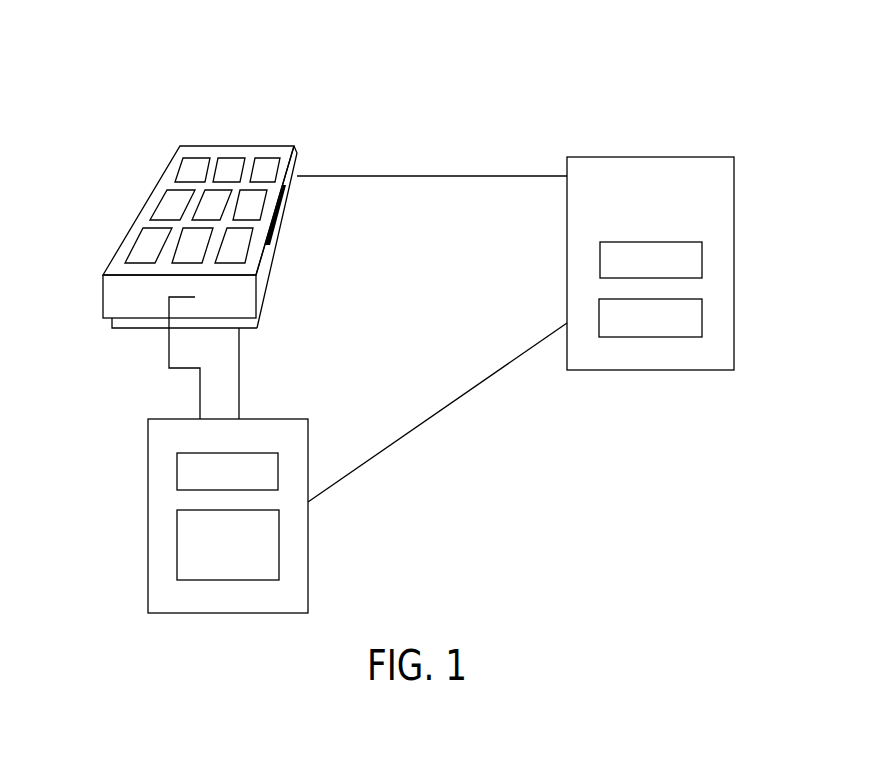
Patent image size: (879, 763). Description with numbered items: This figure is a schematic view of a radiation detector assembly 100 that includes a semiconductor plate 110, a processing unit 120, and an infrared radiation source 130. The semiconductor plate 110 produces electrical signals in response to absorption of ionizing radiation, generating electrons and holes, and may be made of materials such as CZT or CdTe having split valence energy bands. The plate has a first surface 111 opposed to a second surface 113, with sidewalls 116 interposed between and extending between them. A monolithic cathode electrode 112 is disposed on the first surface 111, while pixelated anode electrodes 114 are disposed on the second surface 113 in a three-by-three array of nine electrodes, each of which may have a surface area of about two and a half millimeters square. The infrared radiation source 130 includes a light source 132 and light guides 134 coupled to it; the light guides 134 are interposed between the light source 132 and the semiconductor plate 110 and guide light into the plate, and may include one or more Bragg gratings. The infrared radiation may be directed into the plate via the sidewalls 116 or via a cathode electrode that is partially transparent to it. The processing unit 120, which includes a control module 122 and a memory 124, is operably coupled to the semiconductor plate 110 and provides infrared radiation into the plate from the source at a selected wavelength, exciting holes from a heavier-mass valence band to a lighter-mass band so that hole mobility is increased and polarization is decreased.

The radiation detector assembly 100 is at (467, 61).
The semiconductor plate 110 is at (252, 98).
The first surface 111 is at (300, 219).
The monolithic cathode electrode 112 is at (268, 292).
The second surface 113 is at (287, 147).
The pixelated anode electrodes 114 is at (193, 164).
The sidewalls 116 is at (135, 307).
The processing unit 120 is at (647, 157).
The control module 122 is at (703, 258).
The memory 124 is at (703, 318).
The infrared radiation source 130 is at (148, 537).
The light source 132 is at (280, 548).
The light guides 134 is at (278, 458).